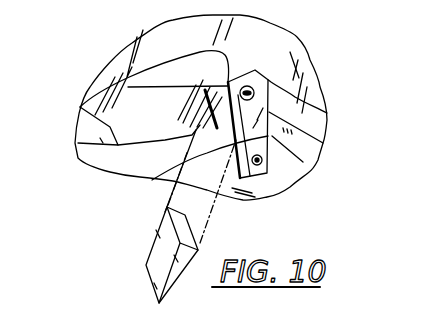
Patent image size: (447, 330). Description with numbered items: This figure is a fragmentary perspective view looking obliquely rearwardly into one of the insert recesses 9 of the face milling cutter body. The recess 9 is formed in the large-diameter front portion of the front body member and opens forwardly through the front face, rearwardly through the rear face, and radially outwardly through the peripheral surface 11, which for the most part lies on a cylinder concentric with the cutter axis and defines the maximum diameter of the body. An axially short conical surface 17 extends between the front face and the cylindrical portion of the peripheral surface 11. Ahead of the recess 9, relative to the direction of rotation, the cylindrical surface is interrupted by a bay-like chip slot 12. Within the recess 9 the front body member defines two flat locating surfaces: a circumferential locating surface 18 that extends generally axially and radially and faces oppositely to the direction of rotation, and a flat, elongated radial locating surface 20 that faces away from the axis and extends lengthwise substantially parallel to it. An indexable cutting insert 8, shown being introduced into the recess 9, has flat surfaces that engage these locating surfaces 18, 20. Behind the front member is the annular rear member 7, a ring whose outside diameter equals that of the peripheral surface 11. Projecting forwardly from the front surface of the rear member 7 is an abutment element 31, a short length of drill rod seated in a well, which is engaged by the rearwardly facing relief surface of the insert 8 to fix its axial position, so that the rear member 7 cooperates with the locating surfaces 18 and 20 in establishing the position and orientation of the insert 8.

The annular rear member 7 is at (137, 43).
The chip slot 12 is at (146, 109).
The circumferential locating surface 18 is at (184, 150).
The radial locating surface 20 is at (165, 182).
The peripheral surface 11 is at (312, 117).
The conical surface 17 is at (300, 137).
The recess 9 is at (265, 92).
The abutment element 31 is at (247, 86).
The indexable cutting insert 8 is at (143, 252).